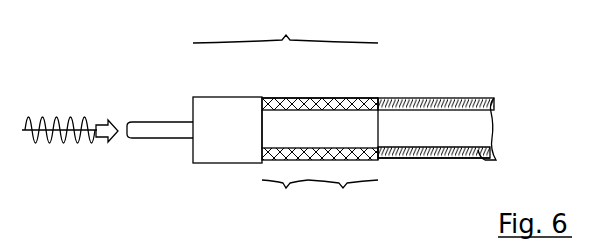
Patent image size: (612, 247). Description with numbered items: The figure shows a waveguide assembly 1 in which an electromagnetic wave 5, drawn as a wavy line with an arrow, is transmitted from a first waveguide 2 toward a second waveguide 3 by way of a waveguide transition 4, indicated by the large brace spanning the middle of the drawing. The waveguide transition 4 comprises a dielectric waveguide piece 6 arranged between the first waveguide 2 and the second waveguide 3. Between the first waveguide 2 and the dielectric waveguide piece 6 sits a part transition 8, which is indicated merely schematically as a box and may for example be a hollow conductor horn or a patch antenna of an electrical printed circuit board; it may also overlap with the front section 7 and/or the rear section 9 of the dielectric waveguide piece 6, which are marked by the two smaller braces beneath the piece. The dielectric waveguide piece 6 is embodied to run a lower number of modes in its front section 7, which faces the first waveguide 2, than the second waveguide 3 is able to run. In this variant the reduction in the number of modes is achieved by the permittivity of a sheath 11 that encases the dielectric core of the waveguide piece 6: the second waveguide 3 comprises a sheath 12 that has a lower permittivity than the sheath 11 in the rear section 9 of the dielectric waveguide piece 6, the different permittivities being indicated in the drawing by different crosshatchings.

The waveguide assembly 1 is at (490, 69).
The first waveguide 2 is at (150, 141).
The second waveguide 3 is at (411, 118).
The waveguide transition 4 is at (286, 35).
The electromagnetic wave 5 is at (29, 118).
The dielectric waveguide piece 6 is at (356, 117).
The front section 7 is at (285, 202).
The part transition 8 is at (237, 142).
The rear section 9 is at (343, 202).
The sheath 11 is at (290, 98).
The sheath 12 is at (431, 160).